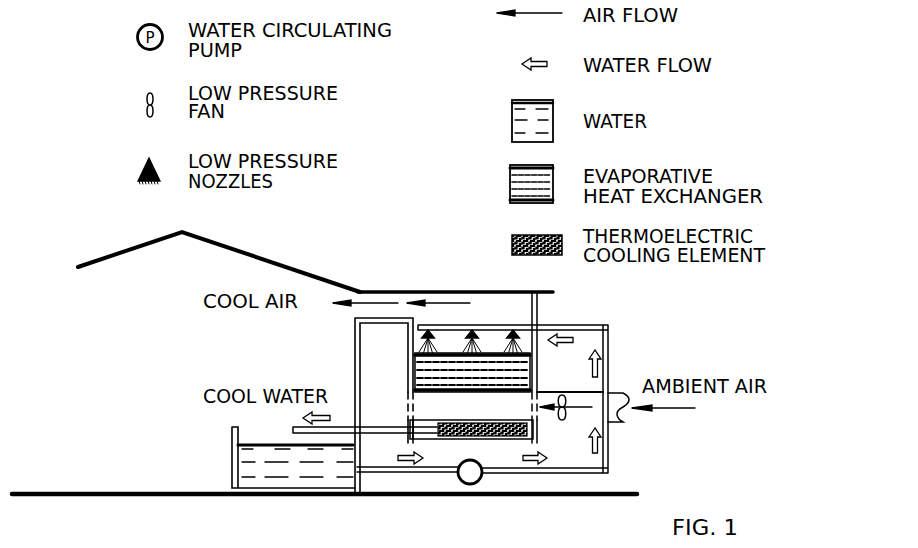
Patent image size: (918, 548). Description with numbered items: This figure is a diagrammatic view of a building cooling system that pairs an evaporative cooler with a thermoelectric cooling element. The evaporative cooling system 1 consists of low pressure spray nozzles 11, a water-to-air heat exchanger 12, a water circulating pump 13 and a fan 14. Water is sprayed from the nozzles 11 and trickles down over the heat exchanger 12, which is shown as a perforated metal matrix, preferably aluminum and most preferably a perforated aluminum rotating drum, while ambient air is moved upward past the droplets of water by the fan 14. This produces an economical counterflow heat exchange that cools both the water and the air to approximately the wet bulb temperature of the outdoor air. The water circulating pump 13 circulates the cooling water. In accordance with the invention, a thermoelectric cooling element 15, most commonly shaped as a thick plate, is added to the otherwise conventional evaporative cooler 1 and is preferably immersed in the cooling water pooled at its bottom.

The evaporative cooling system 1 is at (575, 311).
The low pressure spray nozzles 11 is at (474, 340).
The water-to-air heat exchanger 12 is at (530, 370).
The water circulating pump 13 is at (473, 484).
The fan 14 is at (565, 413).
The thermoelectric cooling element 15 is at (458, 424).